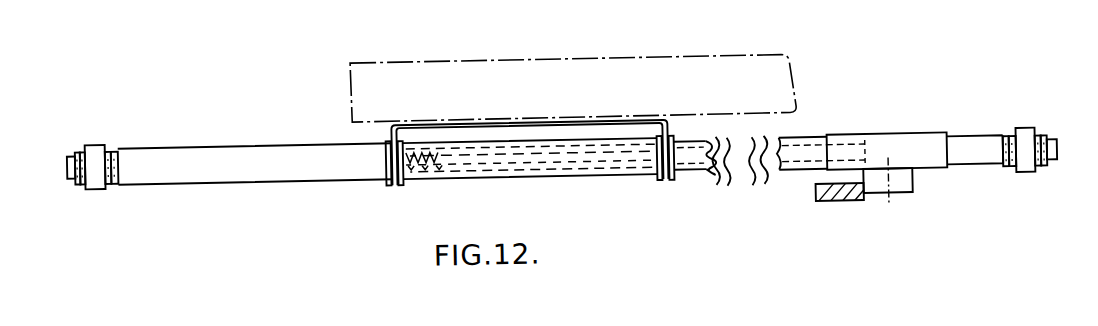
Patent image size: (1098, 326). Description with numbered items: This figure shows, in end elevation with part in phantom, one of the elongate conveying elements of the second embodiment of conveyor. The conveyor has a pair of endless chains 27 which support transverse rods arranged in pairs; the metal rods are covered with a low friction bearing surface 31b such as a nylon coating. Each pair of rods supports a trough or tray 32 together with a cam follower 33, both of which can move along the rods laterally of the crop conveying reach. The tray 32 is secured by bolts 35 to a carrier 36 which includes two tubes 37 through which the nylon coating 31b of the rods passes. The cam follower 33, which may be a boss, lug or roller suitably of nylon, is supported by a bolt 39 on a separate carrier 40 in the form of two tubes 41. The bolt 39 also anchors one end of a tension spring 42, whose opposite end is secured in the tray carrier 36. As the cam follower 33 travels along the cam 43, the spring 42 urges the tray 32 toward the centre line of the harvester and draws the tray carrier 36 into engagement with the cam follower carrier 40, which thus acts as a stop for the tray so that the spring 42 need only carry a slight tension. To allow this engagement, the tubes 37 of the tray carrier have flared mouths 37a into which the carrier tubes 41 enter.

The endless chains 27 is at (100, 181).
The low friction bearing surface 31b is at (188, 166).
The tray 32 is at (570, 85).
The cam follower 33 is at (897, 194).
The bolts 35 is at (432, 124).
The carrier 36 is at (400, 179).
The tubes 37 is at (642, 180).
The flared mouths 37a is at (674, 138).
The bolt 39 is at (883, 197).
The carrier 40 is at (936, 138).
The tubes 41 is at (907, 150).
The tension spring 42 is at (763, 187).
The cam 43 is at (833, 205).